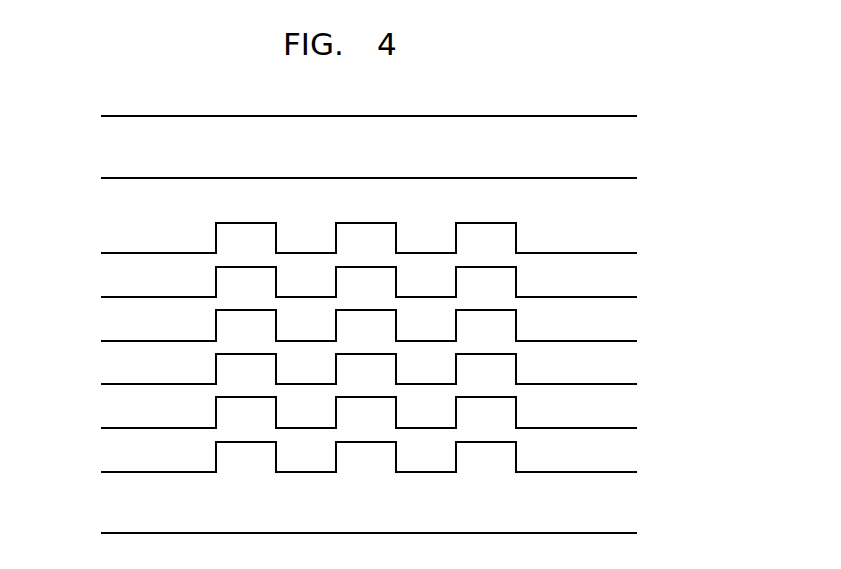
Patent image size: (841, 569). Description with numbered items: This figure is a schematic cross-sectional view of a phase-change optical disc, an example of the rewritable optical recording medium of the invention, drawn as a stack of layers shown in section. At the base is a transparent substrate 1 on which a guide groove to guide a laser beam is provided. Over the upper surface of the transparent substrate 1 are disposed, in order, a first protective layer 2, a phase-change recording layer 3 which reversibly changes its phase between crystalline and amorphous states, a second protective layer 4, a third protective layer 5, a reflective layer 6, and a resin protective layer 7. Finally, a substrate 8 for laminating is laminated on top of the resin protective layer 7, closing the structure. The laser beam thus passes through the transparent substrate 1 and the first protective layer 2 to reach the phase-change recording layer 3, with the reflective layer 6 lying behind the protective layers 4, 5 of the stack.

The transparent substrate 1 is at (125, 515).
The first protective layer 2 is at (119, 458).
The phase-change recording layer 3 is at (125, 412).
The second protective layer 4 is at (119, 368).
The third protective layer 5 is at (119, 330).
The reflective layer 6 is at (125, 287).
The resin protective layer 7 is at (125, 223).
The substrate for laminating 8 is at (125, 152).